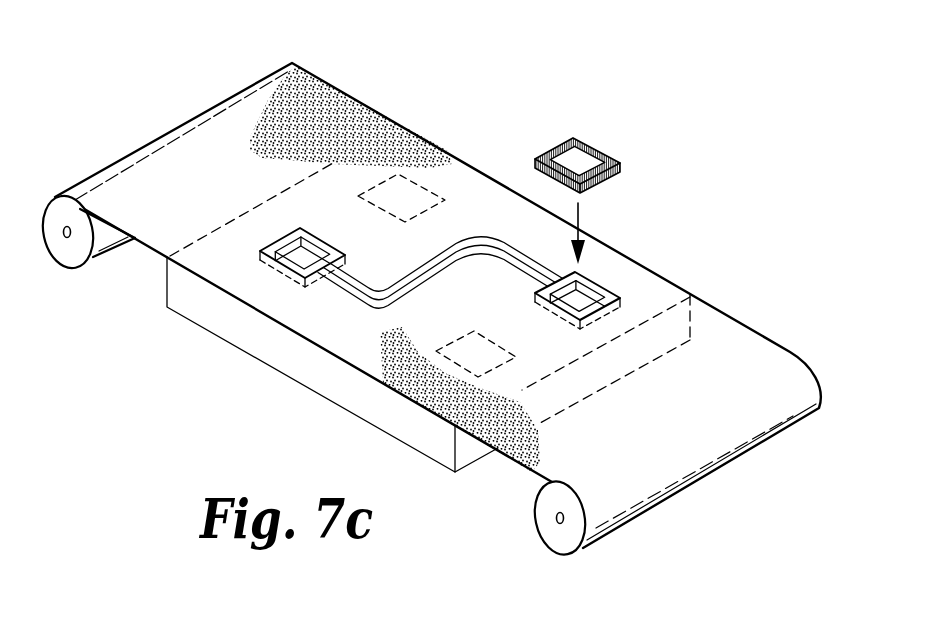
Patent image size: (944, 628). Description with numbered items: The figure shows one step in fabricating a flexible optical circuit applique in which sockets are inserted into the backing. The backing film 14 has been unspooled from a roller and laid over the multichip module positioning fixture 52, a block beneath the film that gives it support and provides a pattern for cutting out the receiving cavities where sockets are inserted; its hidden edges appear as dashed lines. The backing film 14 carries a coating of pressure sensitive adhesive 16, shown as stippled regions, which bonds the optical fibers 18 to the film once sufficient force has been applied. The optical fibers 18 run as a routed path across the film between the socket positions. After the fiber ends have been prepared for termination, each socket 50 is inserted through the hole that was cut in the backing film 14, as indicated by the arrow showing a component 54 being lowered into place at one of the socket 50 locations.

The backing film 14 is at (732, 335).
The pressure sensitive adhesive 16 is at (330, 97).
The optical fibers 18 is at (488, 248).
The socket 50 is at (317, 238).
The multichip module positioning fixture 52 is at (277, 355).
The chip module 54 is at (590, 148).